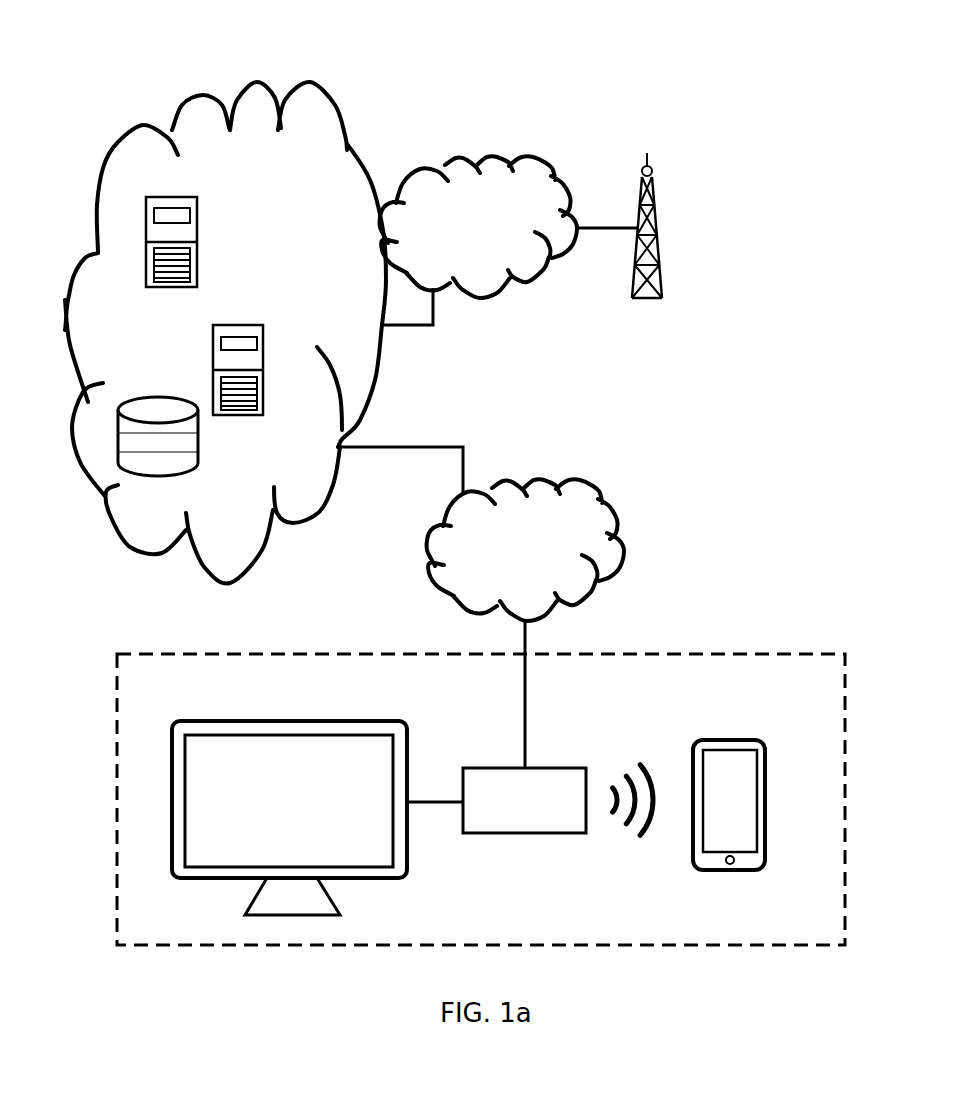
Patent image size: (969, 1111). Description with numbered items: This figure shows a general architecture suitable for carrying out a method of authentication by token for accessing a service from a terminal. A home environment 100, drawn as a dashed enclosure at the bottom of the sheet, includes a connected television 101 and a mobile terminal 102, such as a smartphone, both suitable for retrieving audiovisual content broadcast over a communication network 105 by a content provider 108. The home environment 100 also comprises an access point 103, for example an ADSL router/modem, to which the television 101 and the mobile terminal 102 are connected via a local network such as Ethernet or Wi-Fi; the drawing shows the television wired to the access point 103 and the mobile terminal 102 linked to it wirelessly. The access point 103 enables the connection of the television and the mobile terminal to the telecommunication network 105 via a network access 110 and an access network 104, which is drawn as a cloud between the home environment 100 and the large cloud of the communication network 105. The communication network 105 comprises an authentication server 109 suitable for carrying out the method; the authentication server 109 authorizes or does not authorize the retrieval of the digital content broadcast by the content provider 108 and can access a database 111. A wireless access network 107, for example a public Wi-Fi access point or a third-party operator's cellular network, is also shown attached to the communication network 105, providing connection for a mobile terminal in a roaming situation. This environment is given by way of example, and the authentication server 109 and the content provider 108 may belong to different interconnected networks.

The home environment 100 is at (712, 654).
The connected television 101 is at (295, 720).
The mobile terminal 102 is at (717, 740).
The access point 103 is at (478, 833).
The access network 104 is at (617, 507).
The communication network 105 is at (243, 82).
The wireless access network 107 is at (456, 157).
The content provider 108 is at (197, 197).
The authentication server 109 is at (264, 325).
The network access 110 is at (525, 725).
The database 111 is at (150, 467).